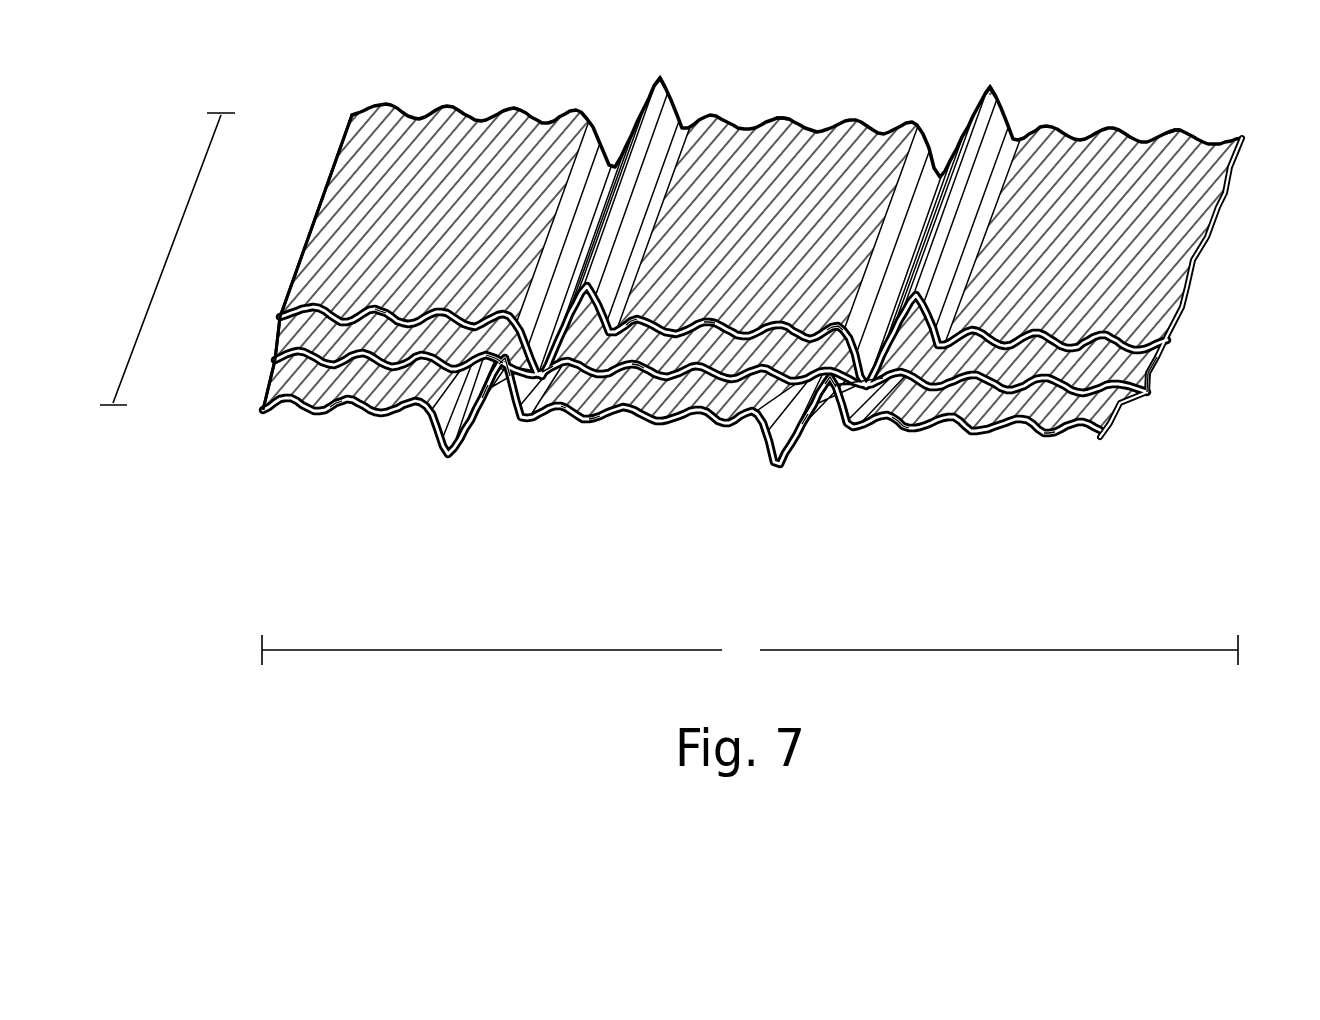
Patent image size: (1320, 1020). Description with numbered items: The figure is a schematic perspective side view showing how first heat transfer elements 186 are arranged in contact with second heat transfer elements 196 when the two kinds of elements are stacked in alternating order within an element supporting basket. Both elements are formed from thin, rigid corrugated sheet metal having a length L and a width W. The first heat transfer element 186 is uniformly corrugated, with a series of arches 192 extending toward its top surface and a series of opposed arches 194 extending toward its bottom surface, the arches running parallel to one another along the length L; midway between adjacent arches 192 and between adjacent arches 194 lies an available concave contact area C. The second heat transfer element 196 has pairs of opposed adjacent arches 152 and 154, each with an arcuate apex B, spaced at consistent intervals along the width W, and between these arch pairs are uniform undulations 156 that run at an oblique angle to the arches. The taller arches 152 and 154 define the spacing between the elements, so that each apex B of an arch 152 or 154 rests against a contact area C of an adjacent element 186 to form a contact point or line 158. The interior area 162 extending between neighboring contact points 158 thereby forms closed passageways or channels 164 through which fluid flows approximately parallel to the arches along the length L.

The arch 152 is at (588, 272).
The arch 154 is at (440, 440).
The uniform undulations 156 is at (783, 160).
The contact point 158 is at (500, 358).
The interior area 162 is at (337, 383).
The closed passageways or channels 164 is at (632, 338).
The first heat transfer element 186 is at (282, 332).
The arches 192 is at (1147, 376).
The opposed arches 194 is at (905, 430).
The second heat transfer element 196 is at (318, 212).
The apex B is at (662, 74).
The concave contact area C is at (486, 402).
The length L is at (167, 259).
The width W is at (750, 651).